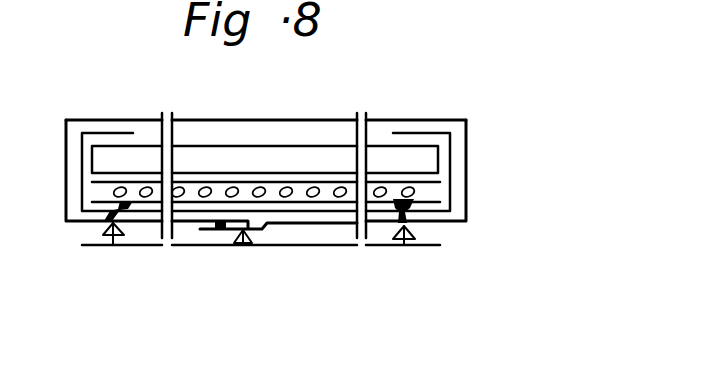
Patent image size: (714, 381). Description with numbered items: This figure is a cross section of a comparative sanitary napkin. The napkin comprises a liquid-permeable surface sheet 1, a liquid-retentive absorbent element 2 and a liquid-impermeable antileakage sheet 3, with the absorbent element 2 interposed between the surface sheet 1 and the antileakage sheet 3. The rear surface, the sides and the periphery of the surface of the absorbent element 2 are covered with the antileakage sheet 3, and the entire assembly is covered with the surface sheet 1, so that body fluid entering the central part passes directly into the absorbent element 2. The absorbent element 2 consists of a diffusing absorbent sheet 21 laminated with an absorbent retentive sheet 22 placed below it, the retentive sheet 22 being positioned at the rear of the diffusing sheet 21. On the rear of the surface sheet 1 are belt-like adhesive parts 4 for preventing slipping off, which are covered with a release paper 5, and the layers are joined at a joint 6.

The surface sheet 1 is at (409, 116).
The absorbent element 2 is at (334, 160).
The diffusing absorbent sheet 21 is at (423, 157).
The absorbent retentive sheet 22 is at (438, 185).
The antileakage sheet 3 is at (448, 210).
The adhesive parts 4 is at (112, 240).
The release paper 5 is at (312, 248).
The joint 6 is at (116, 213).